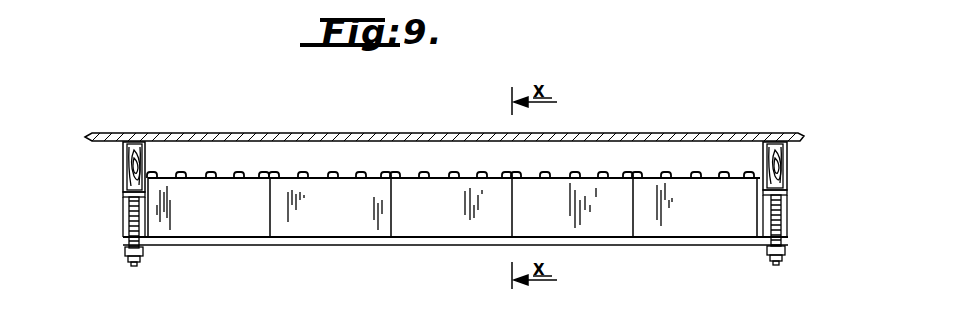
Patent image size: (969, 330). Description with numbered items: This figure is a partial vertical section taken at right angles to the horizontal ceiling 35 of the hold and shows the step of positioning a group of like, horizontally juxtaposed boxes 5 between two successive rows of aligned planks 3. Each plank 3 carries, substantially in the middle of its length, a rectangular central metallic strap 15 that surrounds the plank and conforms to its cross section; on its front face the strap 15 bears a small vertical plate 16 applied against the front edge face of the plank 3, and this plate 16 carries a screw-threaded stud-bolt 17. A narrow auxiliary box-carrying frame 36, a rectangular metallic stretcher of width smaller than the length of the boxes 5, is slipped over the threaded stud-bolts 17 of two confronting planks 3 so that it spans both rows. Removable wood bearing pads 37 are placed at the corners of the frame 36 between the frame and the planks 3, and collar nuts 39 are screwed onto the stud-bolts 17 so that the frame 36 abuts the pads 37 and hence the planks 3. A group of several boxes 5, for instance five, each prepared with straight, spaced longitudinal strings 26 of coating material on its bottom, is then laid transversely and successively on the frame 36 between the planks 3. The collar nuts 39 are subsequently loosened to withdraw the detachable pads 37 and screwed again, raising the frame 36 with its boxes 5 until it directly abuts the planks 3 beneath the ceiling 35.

The horizontal ceiling 35 is at (292, 133).
The plank 3 is at (128, 166).
The strap 15 is at (112, 185).
The small vertical plate 16 is at (144, 197).
The removable wood bearing pad 37 is at (127, 204).
The threaded stud-bolt 17 is at (128, 224).
The collar nut 39 is at (124, 257).
The auxiliary box-carrying frame 36 is at (340, 246).
The box 5 is at (454, 207).
The longitudinal string 26 is at (360, 174).